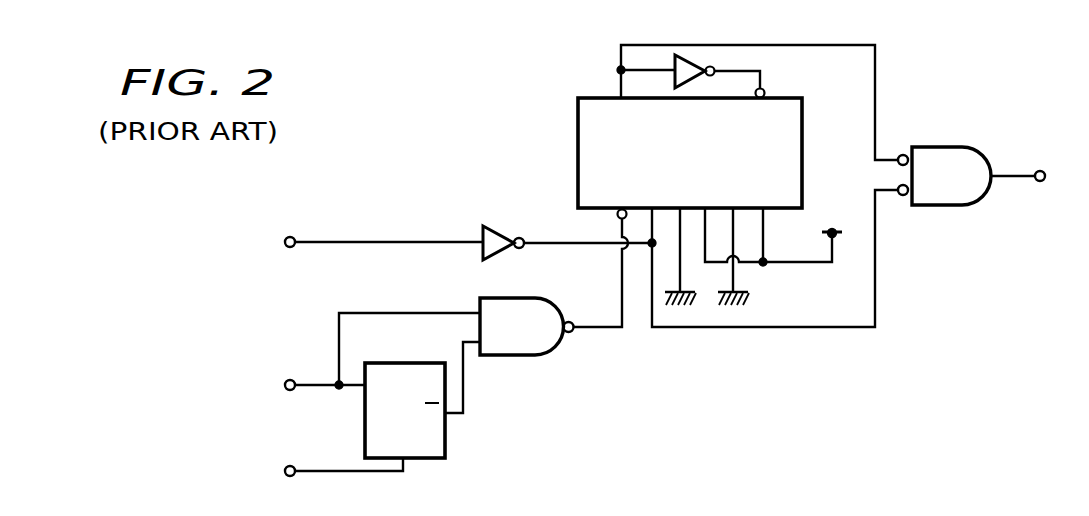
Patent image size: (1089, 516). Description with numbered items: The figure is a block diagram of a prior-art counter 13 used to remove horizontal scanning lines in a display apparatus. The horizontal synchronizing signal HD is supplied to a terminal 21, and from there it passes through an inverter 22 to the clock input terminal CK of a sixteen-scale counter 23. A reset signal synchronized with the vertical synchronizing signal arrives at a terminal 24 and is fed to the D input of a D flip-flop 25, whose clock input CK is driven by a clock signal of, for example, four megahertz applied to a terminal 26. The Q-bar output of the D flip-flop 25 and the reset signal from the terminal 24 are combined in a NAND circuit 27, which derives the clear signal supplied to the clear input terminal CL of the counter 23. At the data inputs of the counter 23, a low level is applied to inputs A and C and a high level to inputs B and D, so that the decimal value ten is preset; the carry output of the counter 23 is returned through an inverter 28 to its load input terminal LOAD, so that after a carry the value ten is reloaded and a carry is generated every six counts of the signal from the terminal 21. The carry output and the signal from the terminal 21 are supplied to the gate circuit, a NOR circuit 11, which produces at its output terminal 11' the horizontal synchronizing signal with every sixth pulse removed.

The counter 13 is at (474, 140).
The 16-scale counter 23 is at (578, 130).
The inverter 28 is at (674, 77).
The gate circuit (NOR circuit) 11 is at (944, 199).
The output terminal 11' is at (1040, 201).
The terminal 21 is at (285, 242).
The inverter 22 is at (517, 249).
The terminal 24 is at (285, 385).
The D flip-flop 25 is at (446, 447).
The terminal 26 is at (285, 471).
The NAND circuit 27 is at (530, 356).